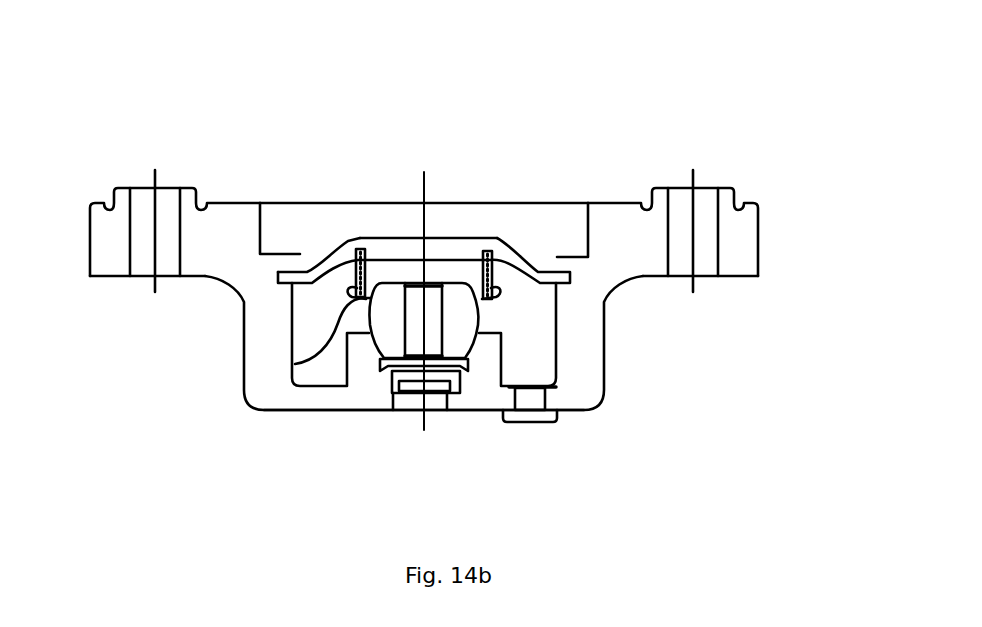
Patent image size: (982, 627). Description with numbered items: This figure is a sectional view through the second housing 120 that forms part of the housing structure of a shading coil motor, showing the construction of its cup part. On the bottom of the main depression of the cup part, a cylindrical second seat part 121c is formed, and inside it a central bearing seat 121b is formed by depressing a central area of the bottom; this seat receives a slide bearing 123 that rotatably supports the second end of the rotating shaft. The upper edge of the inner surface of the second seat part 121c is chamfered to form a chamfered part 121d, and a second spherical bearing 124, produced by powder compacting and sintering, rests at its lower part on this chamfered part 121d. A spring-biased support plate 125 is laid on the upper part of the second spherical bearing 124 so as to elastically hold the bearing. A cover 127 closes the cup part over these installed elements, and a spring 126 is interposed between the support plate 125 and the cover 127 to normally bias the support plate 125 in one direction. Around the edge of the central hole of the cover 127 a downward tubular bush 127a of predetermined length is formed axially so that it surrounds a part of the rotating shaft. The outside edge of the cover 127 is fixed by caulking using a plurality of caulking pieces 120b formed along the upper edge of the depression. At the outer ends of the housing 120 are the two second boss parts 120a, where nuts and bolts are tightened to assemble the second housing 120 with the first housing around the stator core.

The second housing 120 is at (103, 174).
The second boss parts 120a is at (741, 177).
The caulking pieces 120b is at (302, 265).
The central bearing seat 121b is at (392, 394).
The cylindrical second seat part 121c is at (357, 348).
The chamfered part 121d is at (358, 350).
The slide bearing 123 is at (440, 390).
The second spherical bearing 124 is at (468, 316).
The spring-biased support plate 125 is at (295, 364).
The spring 126 is at (357, 262).
The cover 127 is at (424, 198).
The tubular bush 127a is at (383, 243).